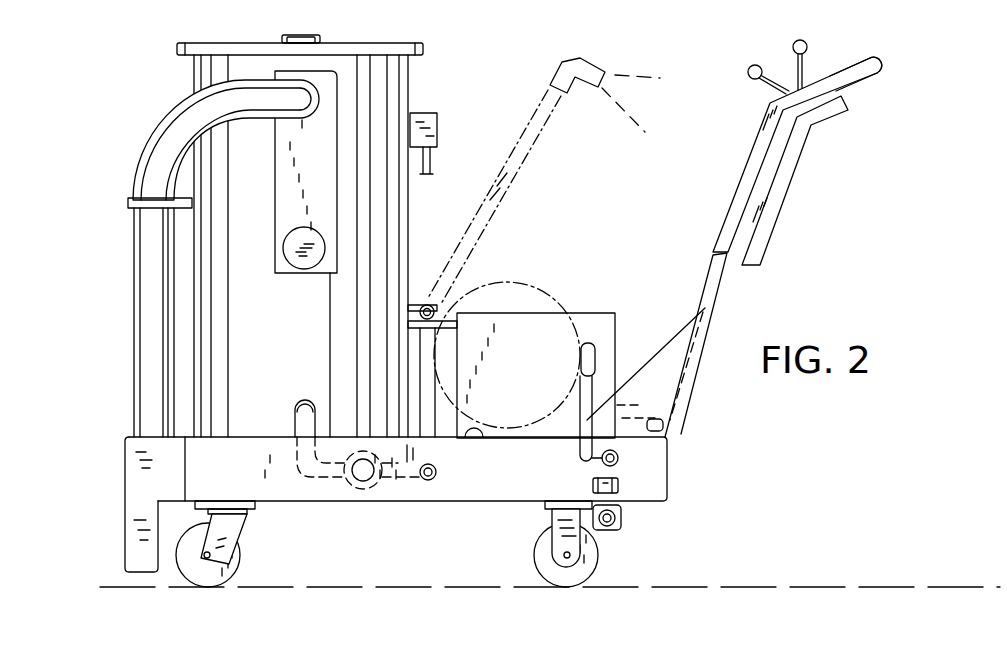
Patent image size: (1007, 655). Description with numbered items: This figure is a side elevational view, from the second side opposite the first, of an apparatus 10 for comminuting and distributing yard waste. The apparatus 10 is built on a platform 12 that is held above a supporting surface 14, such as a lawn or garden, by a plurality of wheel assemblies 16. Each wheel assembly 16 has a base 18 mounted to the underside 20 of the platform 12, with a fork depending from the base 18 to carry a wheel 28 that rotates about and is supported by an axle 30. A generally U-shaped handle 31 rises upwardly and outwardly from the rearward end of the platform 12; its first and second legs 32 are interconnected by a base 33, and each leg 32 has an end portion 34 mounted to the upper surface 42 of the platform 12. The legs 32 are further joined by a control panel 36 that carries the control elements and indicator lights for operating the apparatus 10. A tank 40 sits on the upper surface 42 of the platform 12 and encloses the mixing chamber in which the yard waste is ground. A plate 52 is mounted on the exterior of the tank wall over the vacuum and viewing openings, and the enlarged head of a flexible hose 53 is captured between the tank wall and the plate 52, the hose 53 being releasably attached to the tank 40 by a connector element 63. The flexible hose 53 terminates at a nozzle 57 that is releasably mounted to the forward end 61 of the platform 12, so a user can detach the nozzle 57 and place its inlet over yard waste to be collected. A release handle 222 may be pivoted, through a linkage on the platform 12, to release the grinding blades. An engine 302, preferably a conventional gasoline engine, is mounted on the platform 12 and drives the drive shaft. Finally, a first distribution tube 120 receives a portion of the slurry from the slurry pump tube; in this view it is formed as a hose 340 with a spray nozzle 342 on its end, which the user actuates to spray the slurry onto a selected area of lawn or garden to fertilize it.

The apparatus for comminuting and distributing yard waste 10 is at (758, 416).
The platform 12 is at (673, 478).
The supporting surface 14 is at (791, 586).
The wheel assembly 16 is at (256, 535).
The base 18 is at (260, 505).
The underside 20 is at (345, 503).
The wheel 28 is at (228, 585).
The axle 30 is at (202, 570).
The handle 31 is at (867, 74).
The leg 32 is at (727, 280).
The base 33 is at (876, 58).
The end portion 34 is at (664, 425).
The control panel 36 is at (745, 186).
The tank 40 is at (410, 80).
The upper surface 42 is at (482, 440).
The plate 52 is at (280, 210).
The flexible hose 53 is at (147, 302).
The nozzle 57 is at (121, 507).
The forward end 61 is at (180, 458).
The connector element 63 is at (148, 195).
The first distribution tube 120 is at (440, 345).
The release handle 222 is at (596, 345).
The engine 302 is at (590, 313).
The hose 340 is at (530, 146).
The spray nozzle 342 is at (567, 77).